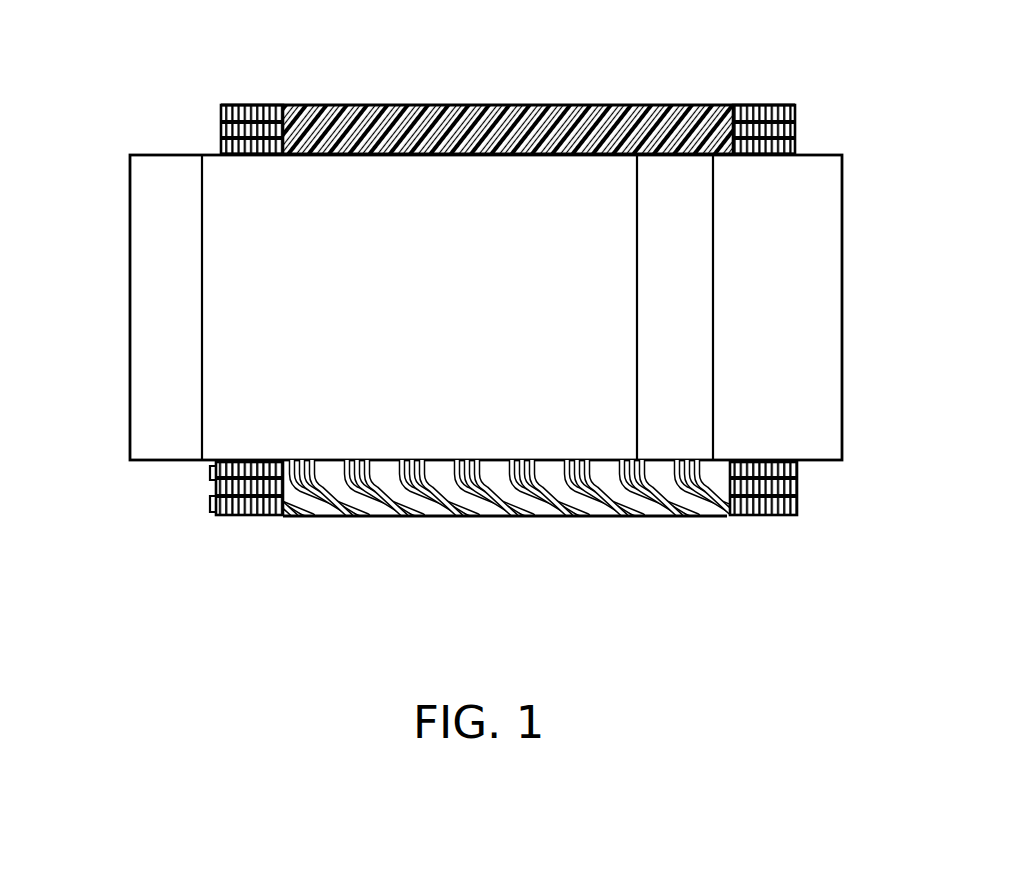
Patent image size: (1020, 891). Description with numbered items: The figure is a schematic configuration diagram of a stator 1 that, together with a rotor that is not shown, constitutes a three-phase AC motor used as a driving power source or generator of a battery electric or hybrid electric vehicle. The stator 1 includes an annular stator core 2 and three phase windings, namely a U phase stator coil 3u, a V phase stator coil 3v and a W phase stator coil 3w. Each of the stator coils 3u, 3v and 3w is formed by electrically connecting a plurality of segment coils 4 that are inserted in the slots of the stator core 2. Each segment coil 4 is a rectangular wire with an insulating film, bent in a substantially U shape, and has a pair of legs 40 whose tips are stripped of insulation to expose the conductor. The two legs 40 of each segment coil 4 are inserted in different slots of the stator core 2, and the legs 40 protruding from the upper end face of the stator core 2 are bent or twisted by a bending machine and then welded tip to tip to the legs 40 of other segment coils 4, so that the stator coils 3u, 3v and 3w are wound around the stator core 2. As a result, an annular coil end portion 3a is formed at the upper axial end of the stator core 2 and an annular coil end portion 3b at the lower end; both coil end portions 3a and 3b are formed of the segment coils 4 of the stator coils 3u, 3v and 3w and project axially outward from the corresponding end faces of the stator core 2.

The stator 1 is at (125, 178).
The stator core 2 is at (138, 280).
The coil end portion 3a is at (496, 97).
The coil end portion 3b is at (500, 522).
The stator coil 3u is at (164, 511).
The stator coil 3v is at (164, 511).
The stator coil 3w is at (203, 482).
The leg 40 is at (674, 108).
The segment coil 4 is at (698, 512).